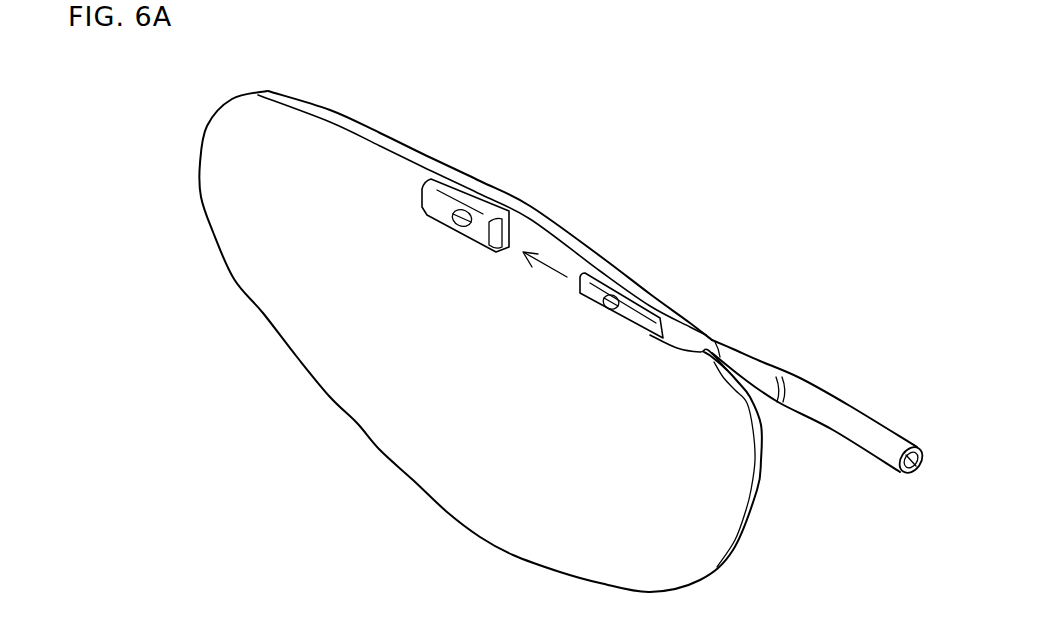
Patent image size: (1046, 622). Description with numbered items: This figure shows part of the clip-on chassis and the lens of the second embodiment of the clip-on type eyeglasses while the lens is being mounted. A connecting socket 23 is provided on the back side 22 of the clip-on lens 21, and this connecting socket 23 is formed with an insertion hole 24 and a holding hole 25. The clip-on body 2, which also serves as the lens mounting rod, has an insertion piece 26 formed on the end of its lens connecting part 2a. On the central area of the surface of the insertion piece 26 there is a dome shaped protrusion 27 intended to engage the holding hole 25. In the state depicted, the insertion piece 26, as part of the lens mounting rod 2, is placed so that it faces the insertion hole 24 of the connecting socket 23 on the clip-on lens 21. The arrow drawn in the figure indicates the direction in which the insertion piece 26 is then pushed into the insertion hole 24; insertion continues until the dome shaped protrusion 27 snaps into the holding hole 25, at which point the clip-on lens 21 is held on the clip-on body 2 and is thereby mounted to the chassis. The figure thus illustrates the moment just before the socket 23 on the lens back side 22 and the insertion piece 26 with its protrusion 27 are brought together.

The clip-on body 2 is at (862, 435).
The lens connecting part 2a is at (759, 370).
The clip-on lens 21 is at (448, 476).
The back side 22 is at (317, 360).
The connecting socket 23 is at (438, 210).
The insertion hole 24 is at (514, 224).
The holding hole 25 is at (457, 225).
The insertion piece 26 is at (642, 321).
The dome shaped protrusion 27 is at (622, 291).